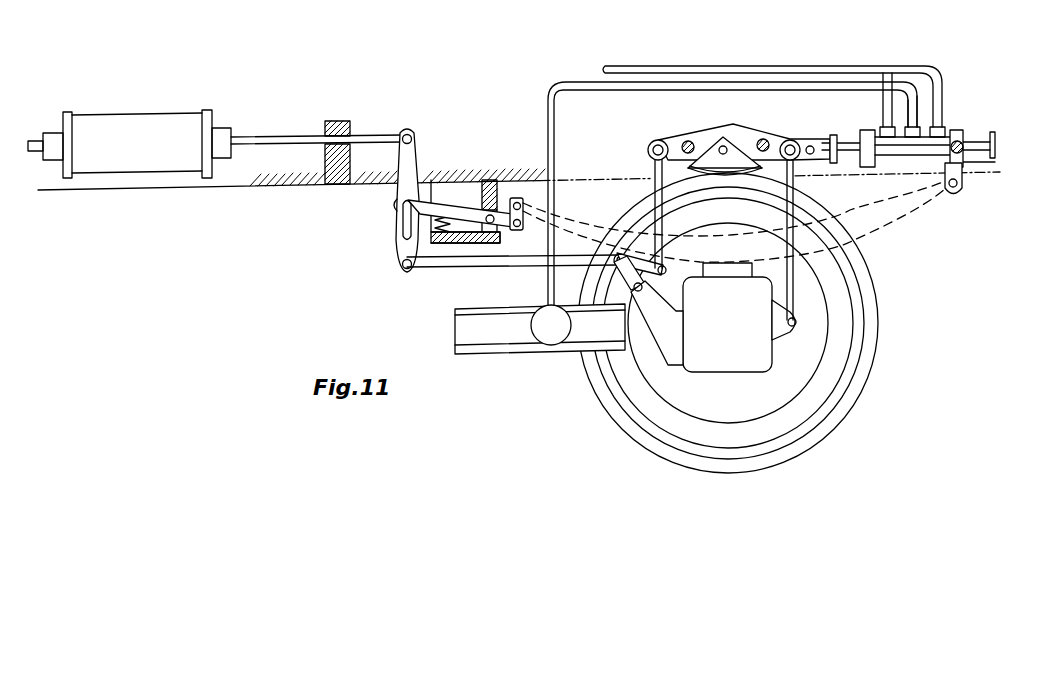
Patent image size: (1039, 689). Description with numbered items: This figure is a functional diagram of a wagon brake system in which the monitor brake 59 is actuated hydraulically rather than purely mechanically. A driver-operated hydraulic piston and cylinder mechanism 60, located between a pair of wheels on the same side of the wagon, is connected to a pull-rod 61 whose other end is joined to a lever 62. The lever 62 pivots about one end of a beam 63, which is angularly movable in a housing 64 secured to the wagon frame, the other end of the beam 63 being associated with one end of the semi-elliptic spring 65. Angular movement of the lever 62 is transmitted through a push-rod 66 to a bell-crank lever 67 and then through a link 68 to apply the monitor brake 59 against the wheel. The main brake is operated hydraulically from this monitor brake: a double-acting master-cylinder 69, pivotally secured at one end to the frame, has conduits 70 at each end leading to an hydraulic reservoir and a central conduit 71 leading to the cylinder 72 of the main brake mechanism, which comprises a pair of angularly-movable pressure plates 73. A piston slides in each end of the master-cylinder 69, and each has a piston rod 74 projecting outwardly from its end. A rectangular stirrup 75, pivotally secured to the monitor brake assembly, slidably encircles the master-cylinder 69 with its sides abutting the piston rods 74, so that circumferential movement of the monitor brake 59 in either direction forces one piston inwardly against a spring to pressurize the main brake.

The monitor brake 59 is at (735, 118).
The hydraulic piston and cylinder mechanism 60 is at (117, 162).
The pull-rod 61 is at (247, 143).
The lever 62 is at (406, 156).
The beam 63 is at (433, 207).
The housing 64 is at (500, 192).
The semi-elliptic spring 65 is at (566, 222).
The push-rod 66 is at (486, 263).
The bell-crank lever 67 is at (668, 284).
The link 68 is at (658, 184).
The double-acting master-cylinder 69 is at (964, 122).
The conduits 70 is at (887, 110).
The central conduit 71 is at (912, 118).
The cylinder 72 is at (553, 342).
The pressure plates 73 is at (496, 336).
The piston rod 74 is at (840, 133).
The rectangular stirrup 75 is at (910, 156).